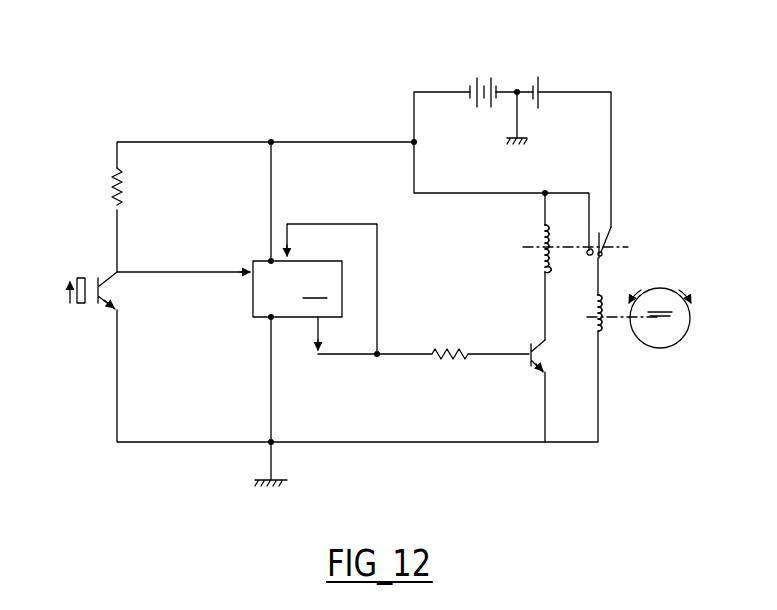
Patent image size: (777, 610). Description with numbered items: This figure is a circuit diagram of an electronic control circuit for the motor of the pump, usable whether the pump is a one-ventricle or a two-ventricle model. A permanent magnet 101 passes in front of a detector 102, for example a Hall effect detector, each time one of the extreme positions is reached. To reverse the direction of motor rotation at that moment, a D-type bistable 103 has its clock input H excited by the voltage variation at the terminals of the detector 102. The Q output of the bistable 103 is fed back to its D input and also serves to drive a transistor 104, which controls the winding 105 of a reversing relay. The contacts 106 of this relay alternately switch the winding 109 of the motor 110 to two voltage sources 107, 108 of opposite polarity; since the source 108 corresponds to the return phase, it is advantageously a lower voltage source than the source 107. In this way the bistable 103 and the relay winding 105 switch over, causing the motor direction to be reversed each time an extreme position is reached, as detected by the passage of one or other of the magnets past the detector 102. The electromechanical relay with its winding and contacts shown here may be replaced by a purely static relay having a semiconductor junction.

The permanent magnet 101 is at (81, 304).
The detector 102 is at (97, 288).
The D-type bistable 103 is at (315, 289).
The transistor 104 is at (530, 352).
The winding of a reversing relay 105 is at (540, 258).
The contacts 106 is at (628, 233).
The voltage source 107 is at (484, 80).
The voltage source 108 is at (540, 83).
The winding of the motor 109 is at (601, 335).
The motor 110 is at (660, 318).